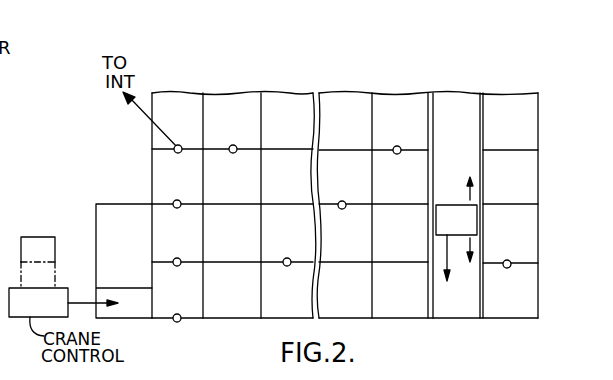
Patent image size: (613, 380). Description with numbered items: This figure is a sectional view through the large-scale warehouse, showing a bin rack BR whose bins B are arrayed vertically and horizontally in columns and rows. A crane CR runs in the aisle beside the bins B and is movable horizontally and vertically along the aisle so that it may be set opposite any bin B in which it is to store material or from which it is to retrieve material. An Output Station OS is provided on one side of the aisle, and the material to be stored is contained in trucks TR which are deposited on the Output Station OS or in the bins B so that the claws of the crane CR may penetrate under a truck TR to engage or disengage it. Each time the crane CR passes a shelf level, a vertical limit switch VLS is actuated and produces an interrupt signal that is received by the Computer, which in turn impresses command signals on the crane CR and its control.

The bin B is at (286, 100).
The bin rack BR is at (572, 150).
The crane CR is at (457, 101).
The vertical limit switch VLS is at (181, 152).
The truck TR is at (56, 245).
The Output Station OS is at (124, 261).